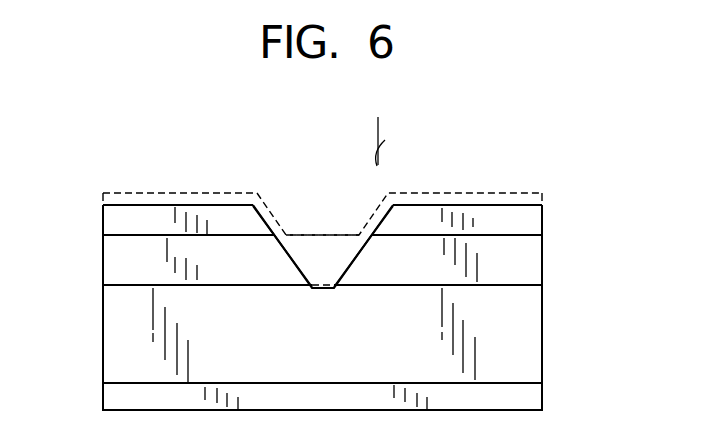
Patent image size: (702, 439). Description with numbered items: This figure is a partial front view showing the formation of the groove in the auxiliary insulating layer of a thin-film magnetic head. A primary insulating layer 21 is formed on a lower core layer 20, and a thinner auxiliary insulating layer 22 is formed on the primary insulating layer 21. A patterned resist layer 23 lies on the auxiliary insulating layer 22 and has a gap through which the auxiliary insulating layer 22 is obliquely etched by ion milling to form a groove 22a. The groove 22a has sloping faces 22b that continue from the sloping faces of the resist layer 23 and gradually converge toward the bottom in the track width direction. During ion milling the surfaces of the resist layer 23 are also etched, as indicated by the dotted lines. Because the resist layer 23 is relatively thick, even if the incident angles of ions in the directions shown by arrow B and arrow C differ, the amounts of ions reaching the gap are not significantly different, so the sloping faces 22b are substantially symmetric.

The lower core layer 20 is at (518, 400).
The primary insulating layer 21 is at (518, 330).
The auxiliary insulating layer 22 is at (122, 268).
The resist layer 23 is at (122, 222).
The groove 22a is at (322, 254).
The sloping faces 22b is at (288, 257).
The arrow B (ion incident direction) B is at (358, 177).
The arrow C (ion incident direction) C is at (284, 178).